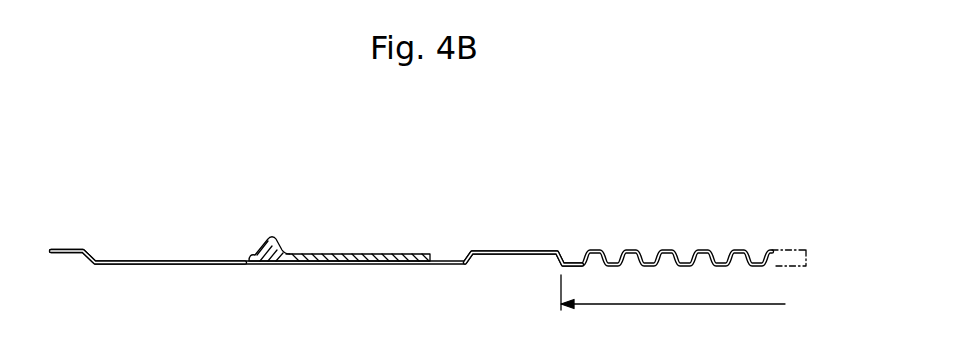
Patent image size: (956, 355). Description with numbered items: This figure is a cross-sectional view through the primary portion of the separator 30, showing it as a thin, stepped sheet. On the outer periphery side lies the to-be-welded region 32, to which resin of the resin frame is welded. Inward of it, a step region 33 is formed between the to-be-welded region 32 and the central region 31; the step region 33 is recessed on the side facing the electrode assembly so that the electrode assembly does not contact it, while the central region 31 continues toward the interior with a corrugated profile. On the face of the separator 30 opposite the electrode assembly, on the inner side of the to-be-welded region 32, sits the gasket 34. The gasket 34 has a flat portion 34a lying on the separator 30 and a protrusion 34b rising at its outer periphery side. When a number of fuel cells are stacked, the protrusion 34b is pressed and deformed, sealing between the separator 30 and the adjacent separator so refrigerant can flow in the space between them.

The separator 30 is at (501, 186).
The central region 31 is at (623, 304).
The to-be-welded region 32 is at (157, 262).
The step region 33 is at (493, 255).
The gasket 34 is at (377, 157).
The flat portion 34a is at (356, 254).
The protrusion 34b is at (275, 237).